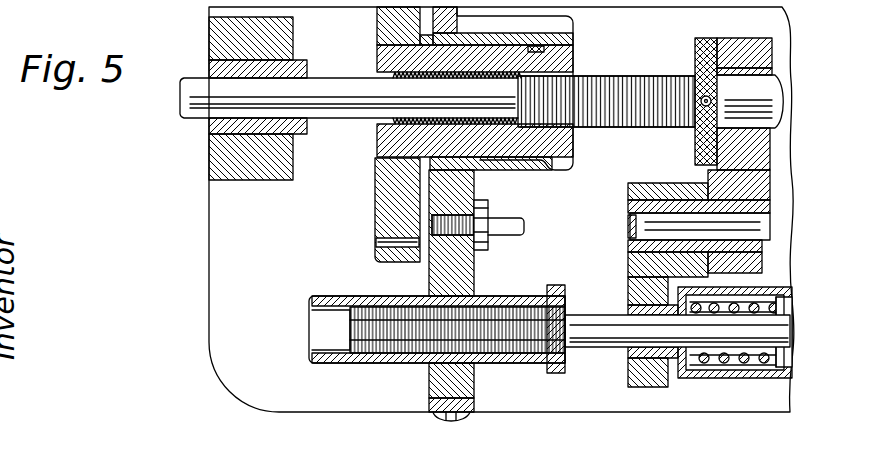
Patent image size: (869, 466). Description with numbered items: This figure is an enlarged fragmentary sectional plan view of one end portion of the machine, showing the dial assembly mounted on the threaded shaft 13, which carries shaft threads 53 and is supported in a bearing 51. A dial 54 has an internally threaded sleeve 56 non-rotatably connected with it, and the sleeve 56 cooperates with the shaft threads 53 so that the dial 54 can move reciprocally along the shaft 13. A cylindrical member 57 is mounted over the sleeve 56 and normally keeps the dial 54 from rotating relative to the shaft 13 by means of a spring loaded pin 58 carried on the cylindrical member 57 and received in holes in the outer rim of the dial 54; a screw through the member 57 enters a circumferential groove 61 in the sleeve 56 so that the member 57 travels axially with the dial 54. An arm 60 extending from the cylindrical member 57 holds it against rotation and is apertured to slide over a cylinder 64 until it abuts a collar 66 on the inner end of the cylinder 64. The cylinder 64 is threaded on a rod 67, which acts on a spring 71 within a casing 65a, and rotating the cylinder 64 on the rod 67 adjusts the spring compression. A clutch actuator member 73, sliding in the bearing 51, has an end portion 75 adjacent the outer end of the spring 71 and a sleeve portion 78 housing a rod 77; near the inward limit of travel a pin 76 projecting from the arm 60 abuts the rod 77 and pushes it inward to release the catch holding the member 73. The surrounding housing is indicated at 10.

The housing 10 is at (790, 180).
The shaft 13 is at (185, 98).
The bearing 51 is at (745, 38).
The shaft threads 53 is at (622, 75).
The dial 54 is at (378, 192).
The internally threaded sleeve 56 is at (376, 58).
The cylindrical member 57 is at (552, 168).
The spring loaded pin 58 is at (222, 27).
The arm 60 is at (470, 278).
The circumferential groove 61 is at (533, 42).
The cylinder 64 is at (338, 296).
The casing 65a is at (783, 290).
The collar 66 is at (553, 285).
The rod 67 is at (603, 343).
The spring 71 is at (790, 309).
The clutch actuator member 73 is at (773, 207).
The end portion 75 is at (630, 262).
The pin 76 is at (508, 215).
The rod 77 is at (740, 222).
The sleeve portion 78 is at (764, 252).